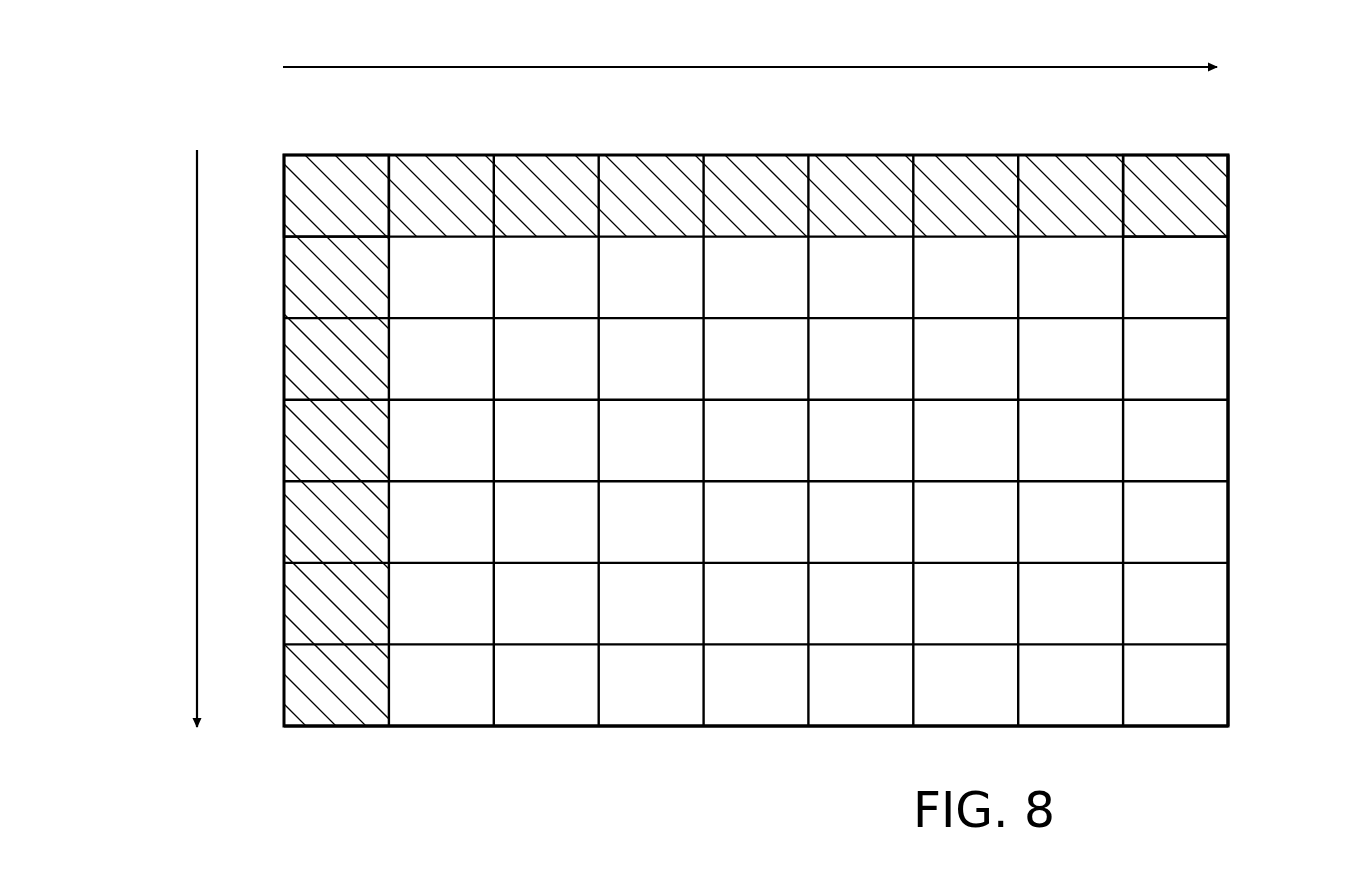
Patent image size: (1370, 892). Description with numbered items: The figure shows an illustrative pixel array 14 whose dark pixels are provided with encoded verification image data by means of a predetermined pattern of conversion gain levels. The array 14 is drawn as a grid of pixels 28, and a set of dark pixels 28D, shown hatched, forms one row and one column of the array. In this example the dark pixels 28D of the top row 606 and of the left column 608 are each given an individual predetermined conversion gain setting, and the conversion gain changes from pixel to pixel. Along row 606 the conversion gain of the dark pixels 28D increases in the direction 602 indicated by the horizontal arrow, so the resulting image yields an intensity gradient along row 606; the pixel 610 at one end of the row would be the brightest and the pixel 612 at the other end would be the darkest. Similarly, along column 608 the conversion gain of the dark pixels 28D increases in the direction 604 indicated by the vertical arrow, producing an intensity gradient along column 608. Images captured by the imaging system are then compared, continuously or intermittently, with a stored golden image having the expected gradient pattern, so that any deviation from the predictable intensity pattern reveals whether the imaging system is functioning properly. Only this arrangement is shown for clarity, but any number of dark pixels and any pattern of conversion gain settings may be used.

The pixel array 14 is at (685, 448).
The pixel 28 is at (1217, 442).
The dark pixels 28D is at (962, 158).
The direction 602 is at (796, 66).
The direction 604 is at (195, 312).
The row 606 is at (1250, 181).
The column 608 is at (337, 745).
The pixel 610 is at (1218, 205).
The pixel 612 is at (350, 162).